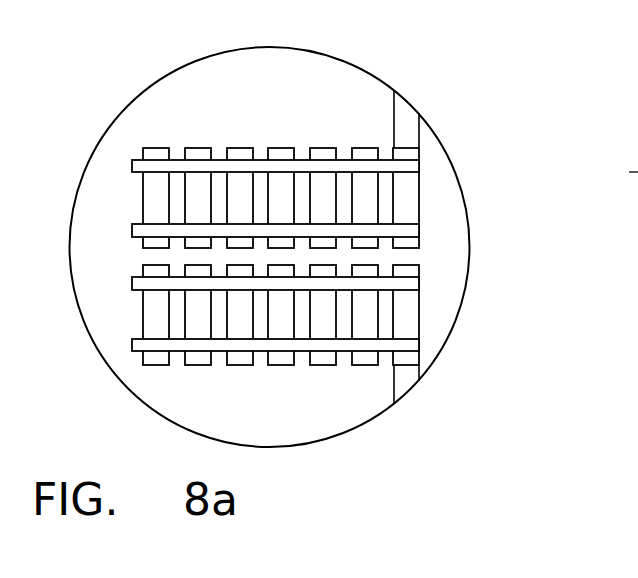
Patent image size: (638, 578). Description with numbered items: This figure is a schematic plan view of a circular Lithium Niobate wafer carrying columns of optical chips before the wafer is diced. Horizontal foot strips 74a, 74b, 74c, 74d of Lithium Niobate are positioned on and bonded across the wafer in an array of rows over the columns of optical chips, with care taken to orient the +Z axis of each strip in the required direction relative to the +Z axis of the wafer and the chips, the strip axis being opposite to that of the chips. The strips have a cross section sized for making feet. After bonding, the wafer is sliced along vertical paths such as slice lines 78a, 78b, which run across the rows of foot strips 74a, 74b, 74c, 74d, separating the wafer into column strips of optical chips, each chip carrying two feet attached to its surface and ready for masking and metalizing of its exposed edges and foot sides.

The foot strip 74a is at (413, 172).
The foot strip 74b is at (410, 232).
The foot strip 74c is at (413, 283).
The foot strip 74d is at (413, 350).
The slice line 78a is at (394, 78).
The slice line 78b is at (419, 78).